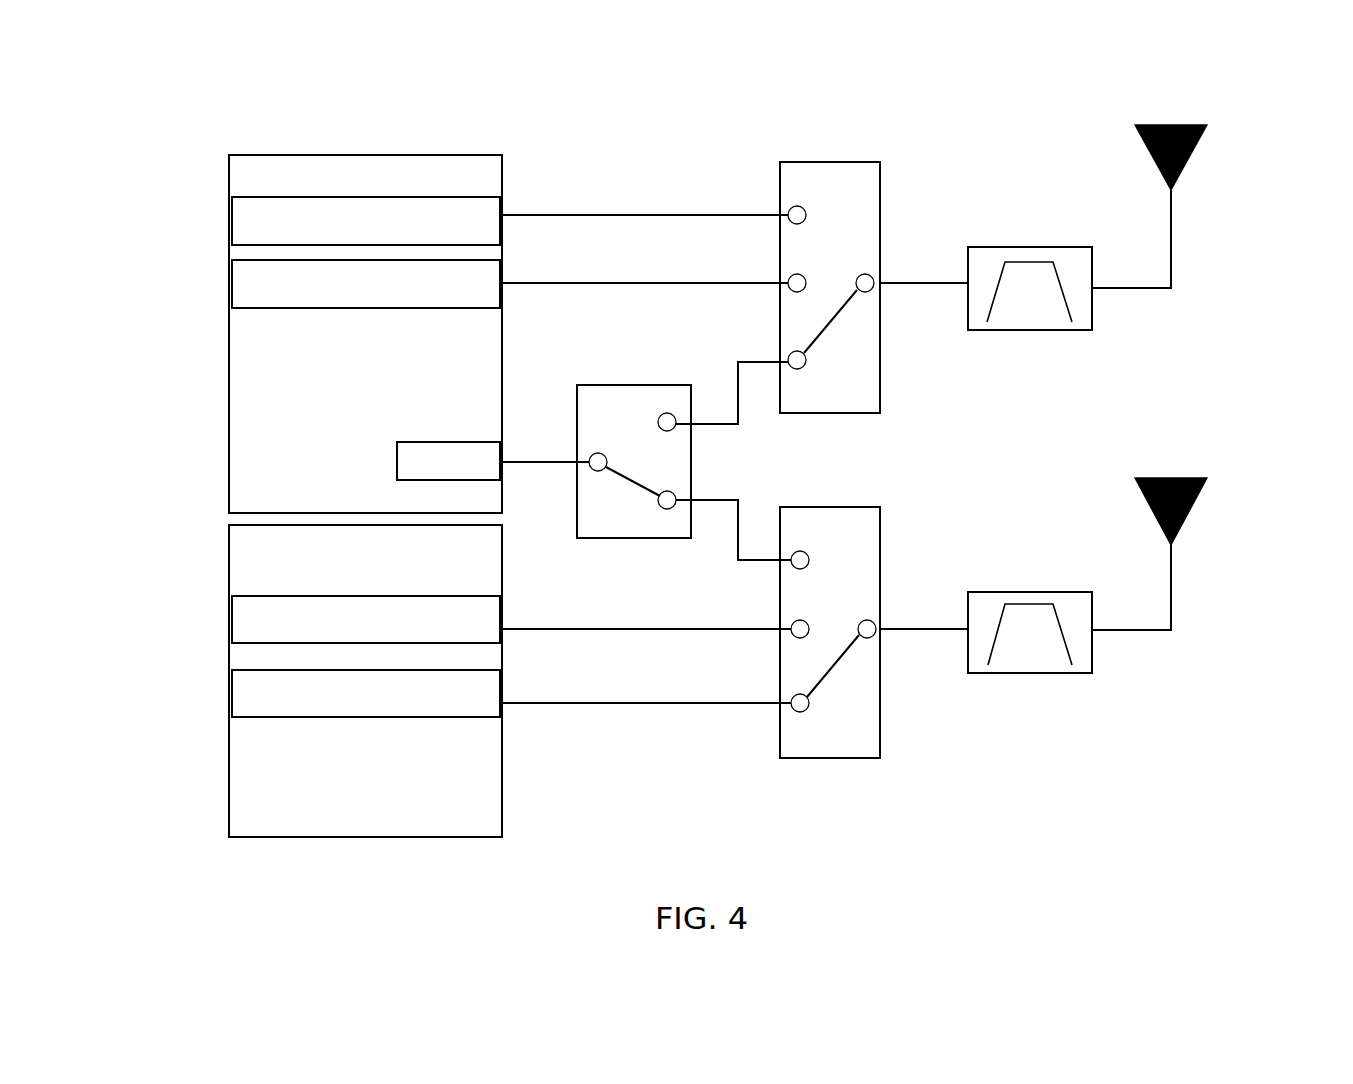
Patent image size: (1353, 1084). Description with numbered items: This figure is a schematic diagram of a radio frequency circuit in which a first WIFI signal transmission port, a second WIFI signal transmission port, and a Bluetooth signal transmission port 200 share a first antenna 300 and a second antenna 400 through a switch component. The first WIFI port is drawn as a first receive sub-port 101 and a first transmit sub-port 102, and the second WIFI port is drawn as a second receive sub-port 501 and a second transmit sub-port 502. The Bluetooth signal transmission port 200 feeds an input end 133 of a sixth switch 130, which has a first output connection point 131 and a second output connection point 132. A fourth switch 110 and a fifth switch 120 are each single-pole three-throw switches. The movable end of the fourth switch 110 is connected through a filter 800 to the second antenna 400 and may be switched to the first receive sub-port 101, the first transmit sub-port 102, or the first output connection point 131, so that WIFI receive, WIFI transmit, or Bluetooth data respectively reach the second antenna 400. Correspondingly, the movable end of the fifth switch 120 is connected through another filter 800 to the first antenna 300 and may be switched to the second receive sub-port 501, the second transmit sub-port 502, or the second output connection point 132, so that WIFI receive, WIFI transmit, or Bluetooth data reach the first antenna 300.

The first receive sub-port 101 is at (229, 688).
The first transmit sub-port 102 is at (229, 612).
The second receive sub-port 501 is at (229, 275).
The second transmit sub-port 502 is at (229, 215).
The Bluetooth signal transmission port 200 is at (413, 463).
The sixth switch 130 is at (670, 464).
The first output connection point 131 is at (661, 506).
The second output connection point 132 is at (677, 423).
The input end 133 is at (592, 467).
The fifth switch 120 is at (817, 185).
The fourth switch 110 is at (860, 522).
The filter 800 is at (997, 258).
The first antenna 300 is at (1170, 122).
The second antenna 400 is at (1170, 475).